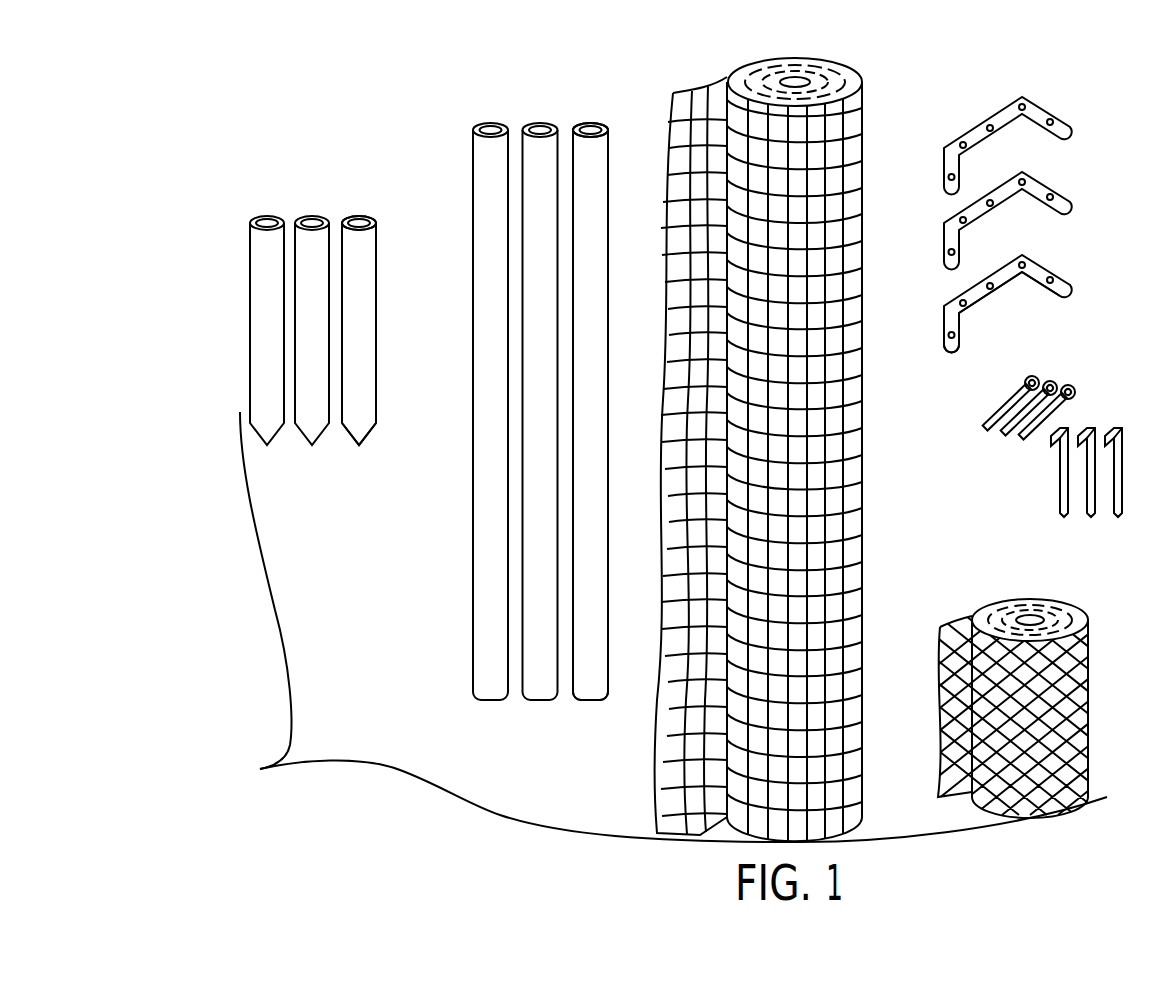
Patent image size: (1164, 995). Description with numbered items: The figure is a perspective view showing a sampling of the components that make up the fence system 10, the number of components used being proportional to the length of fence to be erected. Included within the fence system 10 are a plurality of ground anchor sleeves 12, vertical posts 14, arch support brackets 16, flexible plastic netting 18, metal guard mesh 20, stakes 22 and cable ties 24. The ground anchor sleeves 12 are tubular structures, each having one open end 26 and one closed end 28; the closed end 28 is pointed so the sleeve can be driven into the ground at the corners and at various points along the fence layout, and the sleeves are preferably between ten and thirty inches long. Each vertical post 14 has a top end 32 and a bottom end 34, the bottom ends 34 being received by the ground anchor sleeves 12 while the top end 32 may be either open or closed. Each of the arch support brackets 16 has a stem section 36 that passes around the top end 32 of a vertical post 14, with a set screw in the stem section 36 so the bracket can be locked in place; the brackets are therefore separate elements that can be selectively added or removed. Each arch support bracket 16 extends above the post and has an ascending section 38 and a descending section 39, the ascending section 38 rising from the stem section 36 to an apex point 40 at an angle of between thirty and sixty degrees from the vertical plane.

The fence system 10 is at (262, 769).
The ground anchor sleeves 12 is at (337, 301).
The vertical posts 14 is at (565, 398).
The arch support brackets 16 is at (1045, 225).
The flexible plastic netting 18 is at (862, 80).
The metal guard mesh 20 is at (1035, 598).
The stakes 22 is at (1052, 430).
The cable ties 24 is at (1033, 372).
The open end 26 is at (377, 218).
The closed end 28 is at (358, 433).
The top end 32 is at (608, 127).
The bottom end 34 is at (605, 700).
The stem section 36 is at (958, 343).
The ascending section 38 is at (982, 297).
The descending section 39 is at (1037, 283).
The apex point 40 is at (1022, 255).